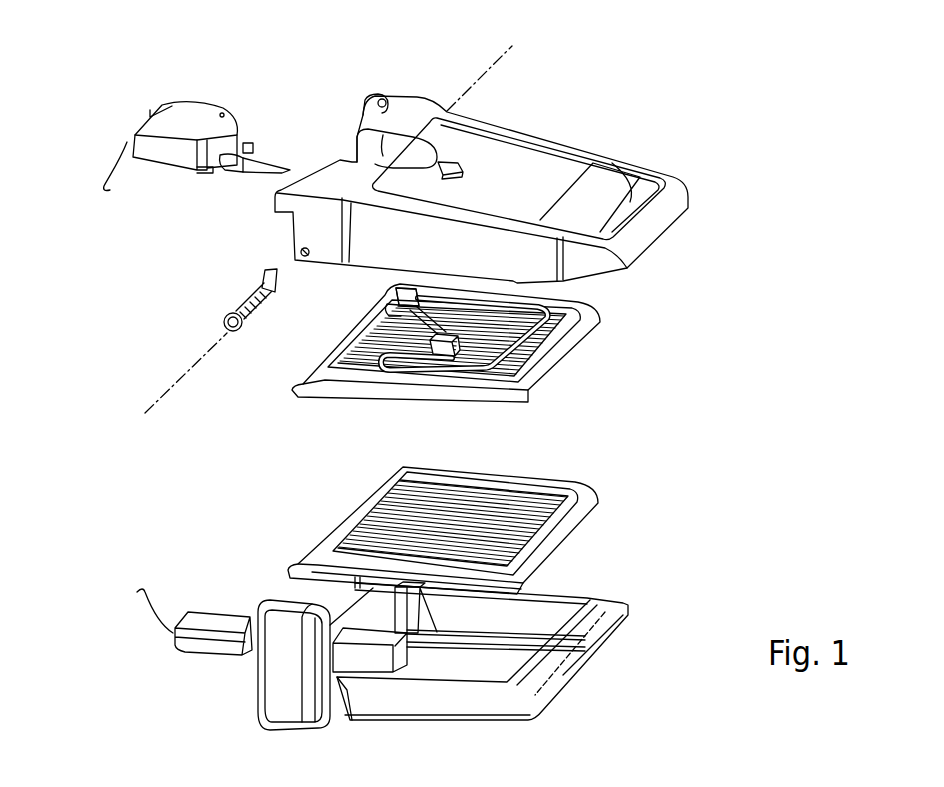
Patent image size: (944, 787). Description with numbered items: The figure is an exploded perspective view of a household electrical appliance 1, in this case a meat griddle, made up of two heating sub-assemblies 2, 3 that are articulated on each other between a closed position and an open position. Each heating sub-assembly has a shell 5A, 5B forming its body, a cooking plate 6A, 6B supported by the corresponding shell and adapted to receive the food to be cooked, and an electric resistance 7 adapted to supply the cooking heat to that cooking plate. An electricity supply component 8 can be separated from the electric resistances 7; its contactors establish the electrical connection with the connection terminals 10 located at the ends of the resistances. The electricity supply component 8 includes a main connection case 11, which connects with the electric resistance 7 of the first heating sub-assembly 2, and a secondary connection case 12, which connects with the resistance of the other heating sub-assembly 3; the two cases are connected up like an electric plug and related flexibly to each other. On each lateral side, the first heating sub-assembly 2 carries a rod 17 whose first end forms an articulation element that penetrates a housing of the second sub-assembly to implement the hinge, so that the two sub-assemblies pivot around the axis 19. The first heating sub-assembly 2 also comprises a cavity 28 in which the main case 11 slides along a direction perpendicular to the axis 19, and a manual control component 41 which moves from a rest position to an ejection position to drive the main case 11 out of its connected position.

The household electrical appliance 1 is at (551, 143).
The first heating sub-assembly 2 is at (508, 345).
The second heating sub-assembly 3 is at (451, 587).
The shell 5A is at (540, 158).
The shell 5B is at (583, 660).
The cooking plate 6A is at (570, 345).
The cooking plate 6B is at (577, 483).
The electric resistance 7 is at (575, 297).
The electricity supply component 8 is at (165, 105).
The connection terminals 10 is at (398, 288).
The main connection case 11 is at (190, 120).
The secondary connection case 12 is at (205, 650).
The rod 17 is at (250, 297).
The axis 19 is at (190, 370).
The cavity 28 is at (384, 150).
The manual control component 41 is at (452, 168).